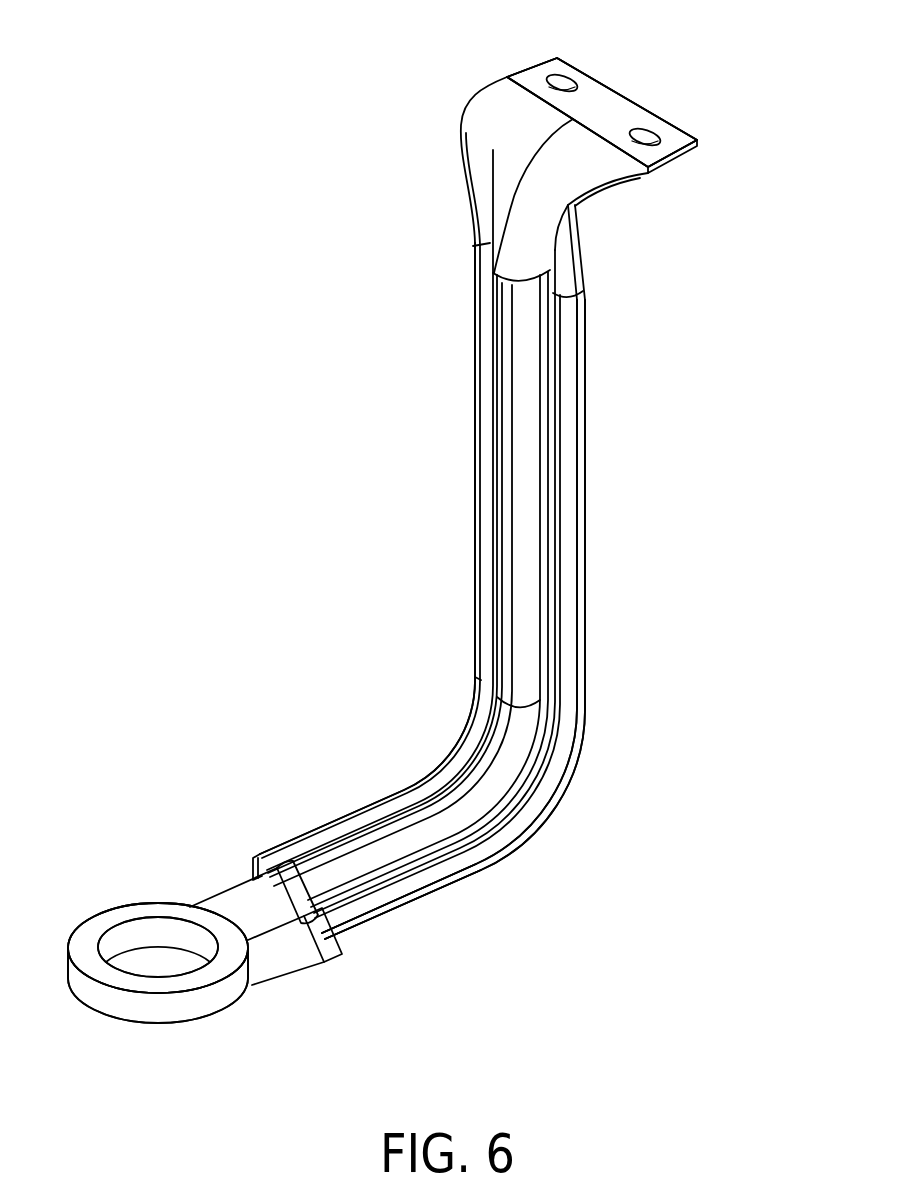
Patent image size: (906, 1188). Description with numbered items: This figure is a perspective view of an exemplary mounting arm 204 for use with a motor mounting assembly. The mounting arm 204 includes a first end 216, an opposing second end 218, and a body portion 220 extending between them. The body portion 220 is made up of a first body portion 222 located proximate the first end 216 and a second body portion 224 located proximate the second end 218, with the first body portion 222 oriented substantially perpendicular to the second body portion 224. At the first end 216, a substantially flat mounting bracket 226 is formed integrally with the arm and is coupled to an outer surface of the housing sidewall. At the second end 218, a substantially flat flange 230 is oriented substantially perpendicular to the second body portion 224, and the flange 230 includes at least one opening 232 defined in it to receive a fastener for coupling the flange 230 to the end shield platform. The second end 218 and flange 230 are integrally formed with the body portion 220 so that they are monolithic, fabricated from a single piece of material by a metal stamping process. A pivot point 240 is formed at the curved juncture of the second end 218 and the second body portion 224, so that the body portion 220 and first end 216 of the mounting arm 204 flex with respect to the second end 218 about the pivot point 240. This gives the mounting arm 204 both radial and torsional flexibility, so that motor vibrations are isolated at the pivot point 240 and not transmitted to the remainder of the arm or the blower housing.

The mounting arm 204 is at (135, 122).
The first end 216 is at (147, 866).
The second end 218 is at (500, 64).
The body portion 220 is at (600, 600).
The first body portion 222 is at (424, 899).
The second body portion 224 is at (585, 448).
The mounting bracket 226 is at (203, 1002).
The flange 230 is at (606, 104).
The opening 232 is at (658, 132).
The pivot point 240 is at (493, 122).